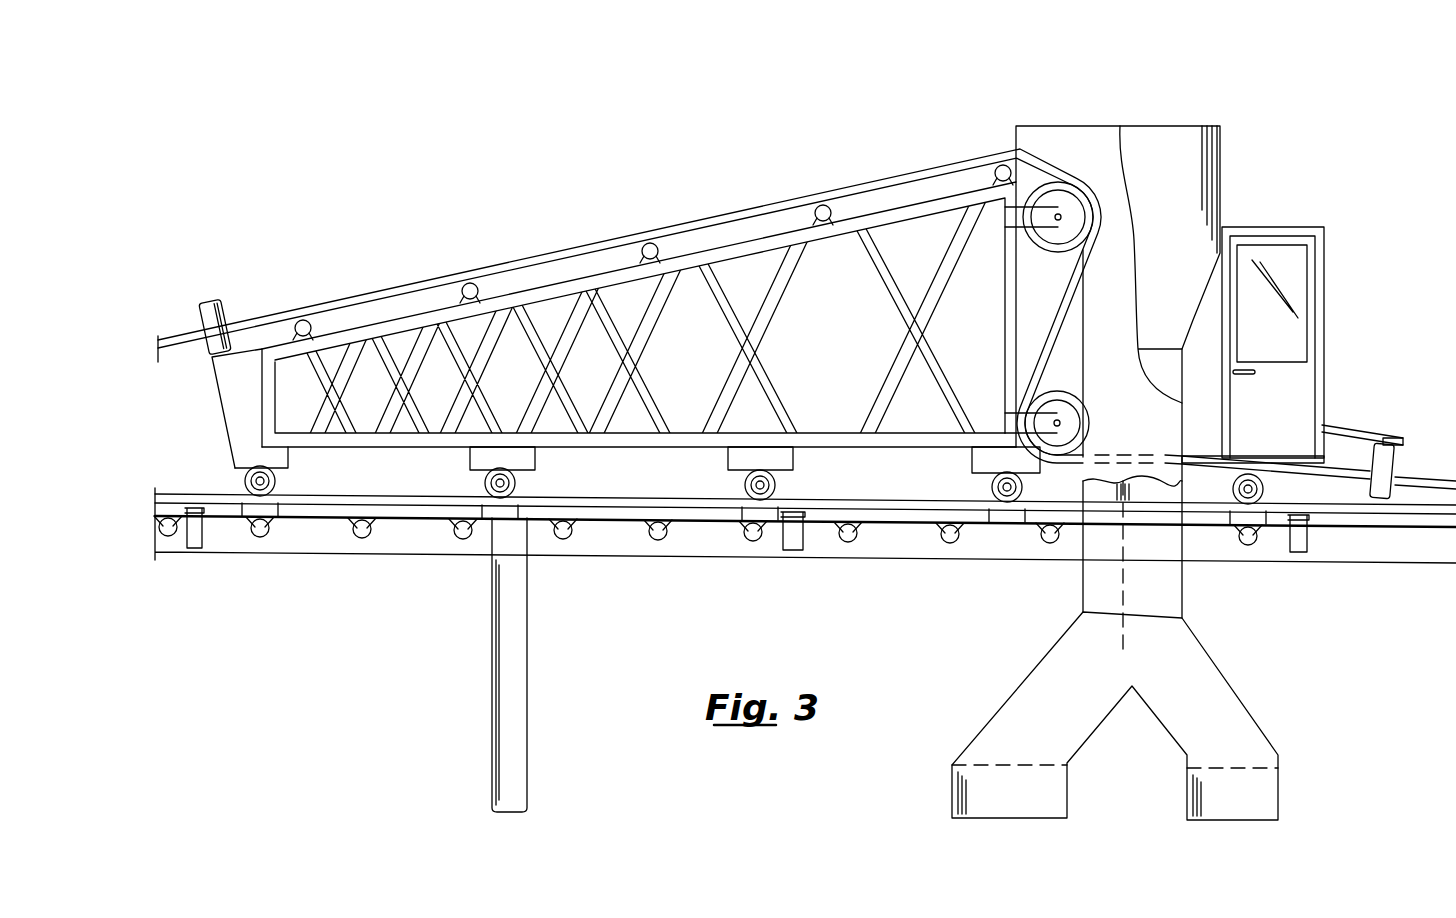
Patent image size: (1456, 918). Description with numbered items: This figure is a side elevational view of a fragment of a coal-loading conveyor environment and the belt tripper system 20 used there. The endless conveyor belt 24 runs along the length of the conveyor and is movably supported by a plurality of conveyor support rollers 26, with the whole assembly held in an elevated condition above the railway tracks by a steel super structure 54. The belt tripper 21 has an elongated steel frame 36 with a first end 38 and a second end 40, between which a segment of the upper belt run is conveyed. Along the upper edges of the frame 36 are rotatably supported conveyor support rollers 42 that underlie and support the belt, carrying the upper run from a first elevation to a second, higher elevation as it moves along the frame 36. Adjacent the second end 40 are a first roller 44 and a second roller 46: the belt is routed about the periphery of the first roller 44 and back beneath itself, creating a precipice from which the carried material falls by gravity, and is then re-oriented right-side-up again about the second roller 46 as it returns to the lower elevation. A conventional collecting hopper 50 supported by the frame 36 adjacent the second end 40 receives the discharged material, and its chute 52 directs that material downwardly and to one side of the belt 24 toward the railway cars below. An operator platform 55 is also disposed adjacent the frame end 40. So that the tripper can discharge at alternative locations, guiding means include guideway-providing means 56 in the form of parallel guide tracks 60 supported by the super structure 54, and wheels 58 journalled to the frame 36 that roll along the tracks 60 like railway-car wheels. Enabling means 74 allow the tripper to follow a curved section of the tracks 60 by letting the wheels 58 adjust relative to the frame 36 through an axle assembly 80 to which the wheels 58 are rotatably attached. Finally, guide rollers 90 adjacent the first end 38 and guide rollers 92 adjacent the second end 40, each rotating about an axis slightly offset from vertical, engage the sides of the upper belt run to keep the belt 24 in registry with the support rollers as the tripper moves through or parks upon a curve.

The belt tripper system 20 is at (1170, 98).
The belt tripper 21 is at (893, 217).
The endless conveyor belt 24 is at (748, 210).
The conveyor support rollers 26 is at (362, 541).
The elongated frame 36 is at (633, 450).
The first end 38 is at (240, 405).
The second end 40 is at (1324, 366).
The conveyor support rollers 42 is at (995, 167).
The first roller 44 is at (1066, 190).
The second roller 46 is at (1072, 392).
The collecting hopper 50 is at (1180, 126).
The chute 52 is at (1198, 658).
The steel super structure 54 is at (528, 614).
The operator platform 55 is at (1328, 300).
The guideway-providing means 56 is at (212, 492).
The wheels 58 is at (517, 490).
The guide tracks 60 is at (324, 501).
The enabling means 74 is at (216, 464).
The axle assembly 80 is at (482, 490).
The guide rollers 90 is at (228, 312).
The guide rollers 92 is at (1398, 470).